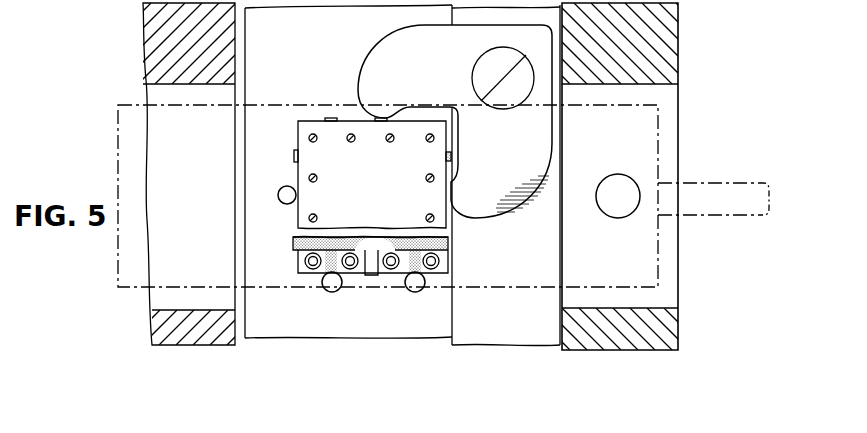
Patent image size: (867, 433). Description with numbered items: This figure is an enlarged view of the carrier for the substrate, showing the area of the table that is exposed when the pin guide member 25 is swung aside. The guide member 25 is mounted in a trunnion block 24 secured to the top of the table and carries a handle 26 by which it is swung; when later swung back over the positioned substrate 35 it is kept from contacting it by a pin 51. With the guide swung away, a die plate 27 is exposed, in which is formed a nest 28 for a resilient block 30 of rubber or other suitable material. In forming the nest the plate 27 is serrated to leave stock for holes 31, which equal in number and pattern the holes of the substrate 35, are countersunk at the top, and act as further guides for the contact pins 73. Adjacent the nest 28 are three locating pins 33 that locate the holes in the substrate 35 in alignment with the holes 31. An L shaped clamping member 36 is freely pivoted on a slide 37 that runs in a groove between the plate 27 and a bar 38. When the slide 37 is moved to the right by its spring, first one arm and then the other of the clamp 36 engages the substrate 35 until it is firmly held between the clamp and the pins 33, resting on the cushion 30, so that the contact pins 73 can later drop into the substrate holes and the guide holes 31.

The trunnion block 24 is at (153, 37).
The guide member 25 is at (118, 163).
The handle 26 is at (722, 183).
The die plate 27 is at (283, 83).
The nest 28 is at (372, 260).
The resilient block 30 is at (293, 245).
The holes 31 is at (308, 260).
The pins 33 is at (282, 190).
The substrate 35 is at (393, 195).
The L shaped clamping member 36 is at (373, 61).
The slide 37 is at (517, 251).
The bar 38 is at (666, 46).
The pin 51 is at (606, 188).
The contact pin 73 is at (352, 143).